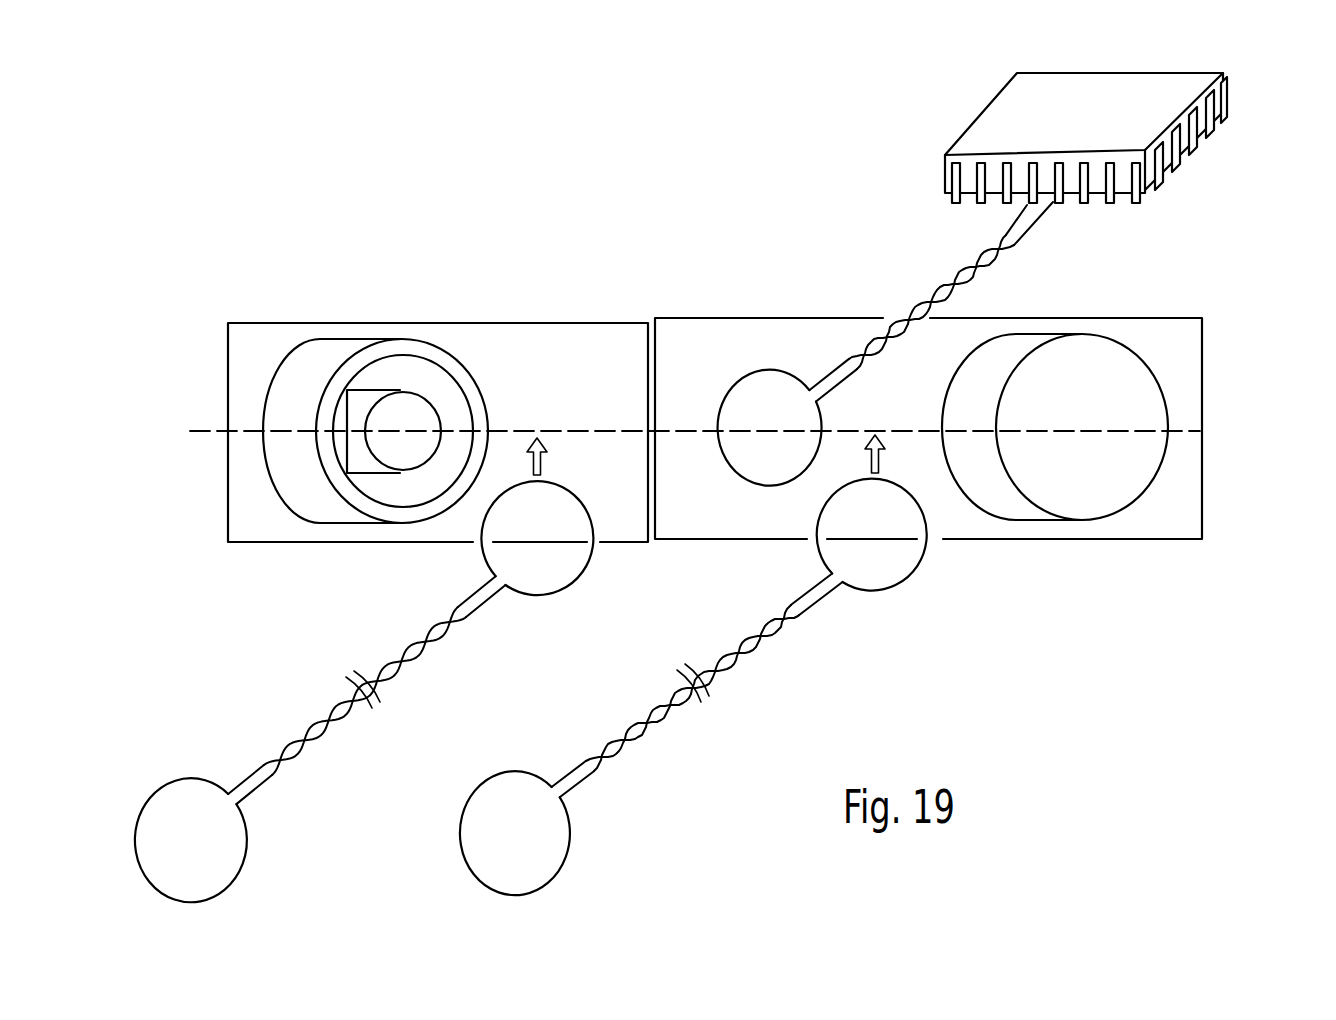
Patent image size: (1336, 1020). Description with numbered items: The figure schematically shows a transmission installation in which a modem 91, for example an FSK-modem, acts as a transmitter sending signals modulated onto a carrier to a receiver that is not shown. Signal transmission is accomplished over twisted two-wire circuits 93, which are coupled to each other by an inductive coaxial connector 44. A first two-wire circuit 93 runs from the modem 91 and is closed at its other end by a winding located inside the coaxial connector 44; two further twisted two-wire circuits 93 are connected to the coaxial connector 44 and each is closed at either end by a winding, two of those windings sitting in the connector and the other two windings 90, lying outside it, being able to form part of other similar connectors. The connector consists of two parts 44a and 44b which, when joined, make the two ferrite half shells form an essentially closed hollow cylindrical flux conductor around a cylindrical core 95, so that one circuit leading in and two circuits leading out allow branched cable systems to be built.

The inductive coaxial connector 44 is at (490, 320).
The first part of coaxial connector 44a is at (1200, 337).
The second part of coaxial connector 44b is at (243, 347).
The winding 90 is at (586, 568).
The modem 91 is at (1002, 128).
The twisted two-wire circuit 93 is at (933, 283).
The cylindrical core 95 is at (420, 420).